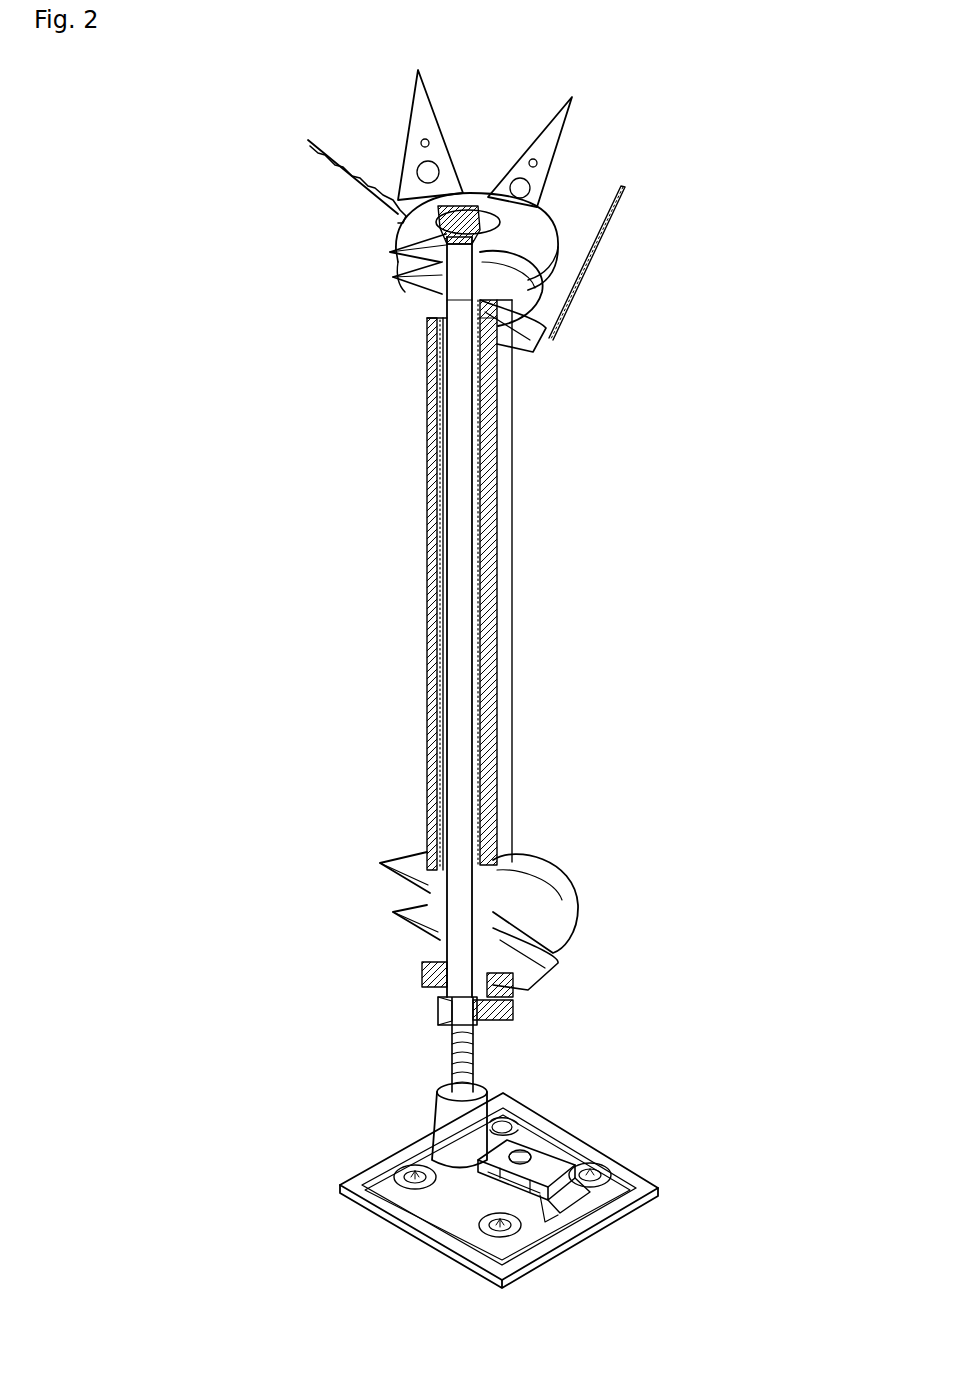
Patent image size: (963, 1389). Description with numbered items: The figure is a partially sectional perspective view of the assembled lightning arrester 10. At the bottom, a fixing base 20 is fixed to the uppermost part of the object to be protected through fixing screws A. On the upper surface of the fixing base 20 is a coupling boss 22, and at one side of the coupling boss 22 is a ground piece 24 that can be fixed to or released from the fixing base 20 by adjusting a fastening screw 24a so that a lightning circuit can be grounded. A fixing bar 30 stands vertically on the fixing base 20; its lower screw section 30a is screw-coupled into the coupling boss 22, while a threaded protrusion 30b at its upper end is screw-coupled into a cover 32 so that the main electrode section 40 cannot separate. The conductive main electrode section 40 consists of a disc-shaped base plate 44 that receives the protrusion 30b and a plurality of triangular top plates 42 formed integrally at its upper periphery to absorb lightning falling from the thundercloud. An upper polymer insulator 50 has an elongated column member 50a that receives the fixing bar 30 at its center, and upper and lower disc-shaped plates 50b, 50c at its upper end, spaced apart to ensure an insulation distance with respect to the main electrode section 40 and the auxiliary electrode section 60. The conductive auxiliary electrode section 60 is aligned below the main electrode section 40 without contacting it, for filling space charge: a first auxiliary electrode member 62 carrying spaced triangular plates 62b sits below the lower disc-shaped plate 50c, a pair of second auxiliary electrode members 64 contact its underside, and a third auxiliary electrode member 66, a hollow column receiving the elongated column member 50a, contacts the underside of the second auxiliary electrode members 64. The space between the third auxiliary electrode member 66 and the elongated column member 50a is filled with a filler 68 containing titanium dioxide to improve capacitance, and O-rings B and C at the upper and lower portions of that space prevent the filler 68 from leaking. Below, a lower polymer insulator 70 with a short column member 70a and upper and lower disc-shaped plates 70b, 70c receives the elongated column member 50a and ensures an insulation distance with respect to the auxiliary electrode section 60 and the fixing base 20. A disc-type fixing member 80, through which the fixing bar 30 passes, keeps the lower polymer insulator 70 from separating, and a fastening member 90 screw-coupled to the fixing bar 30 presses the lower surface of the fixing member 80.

The lightning arrester 10 is at (752, 165).
The fixing base 20 is at (636, 1163).
The coupling boss 22 is at (442, 1122).
The ground piece 24 is at (560, 1191).
The fastening screw 24a is at (522, 1152).
The fixing bar 30 is at (462, 601).
The screw section 30a is at (455, 1061).
The protrusion 30b is at (437, 237).
The cover 32 is at (463, 203).
The main electrode section 40 is at (645, 100).
The triangular top plates 42 is at (571, 120).
The base plate 44 is at (528, 237).
The upper polymer insulator 50 is at (330, 298).
The elongated column member 50a is at (446, 457).
The upper disc-shaped plate 50b is at (472, 303).
The lower disc-shaped plate 50c is at (480, 318).
The auxiliary electrode section 60 is at (660, 350).
The first auxiliary electrode member 62 is at (540, 326).
The triangular plates 62b is at (413, 112).
The second auxiliary electrode members 64 is at (538, 350).
The third auxiliary electrode member 66 is at (513, 456).
The filler 68 is at (492, 506).
The lower polymer insulator 70 is at (666, 890).
The short column member 70a is at (517, 1001).
The upper disc-shaped plate 70b is at (560, 903).
The lower disc-shaped plate 70c is at (540, 968).
The fixing member 80 is at (515, 1021).
The fastening member 90 is at (440, 1011).
The fixing screws A is at (416, 1183).
The O-ring B is at (493, 376).
The O-ring C is at (515, 856).